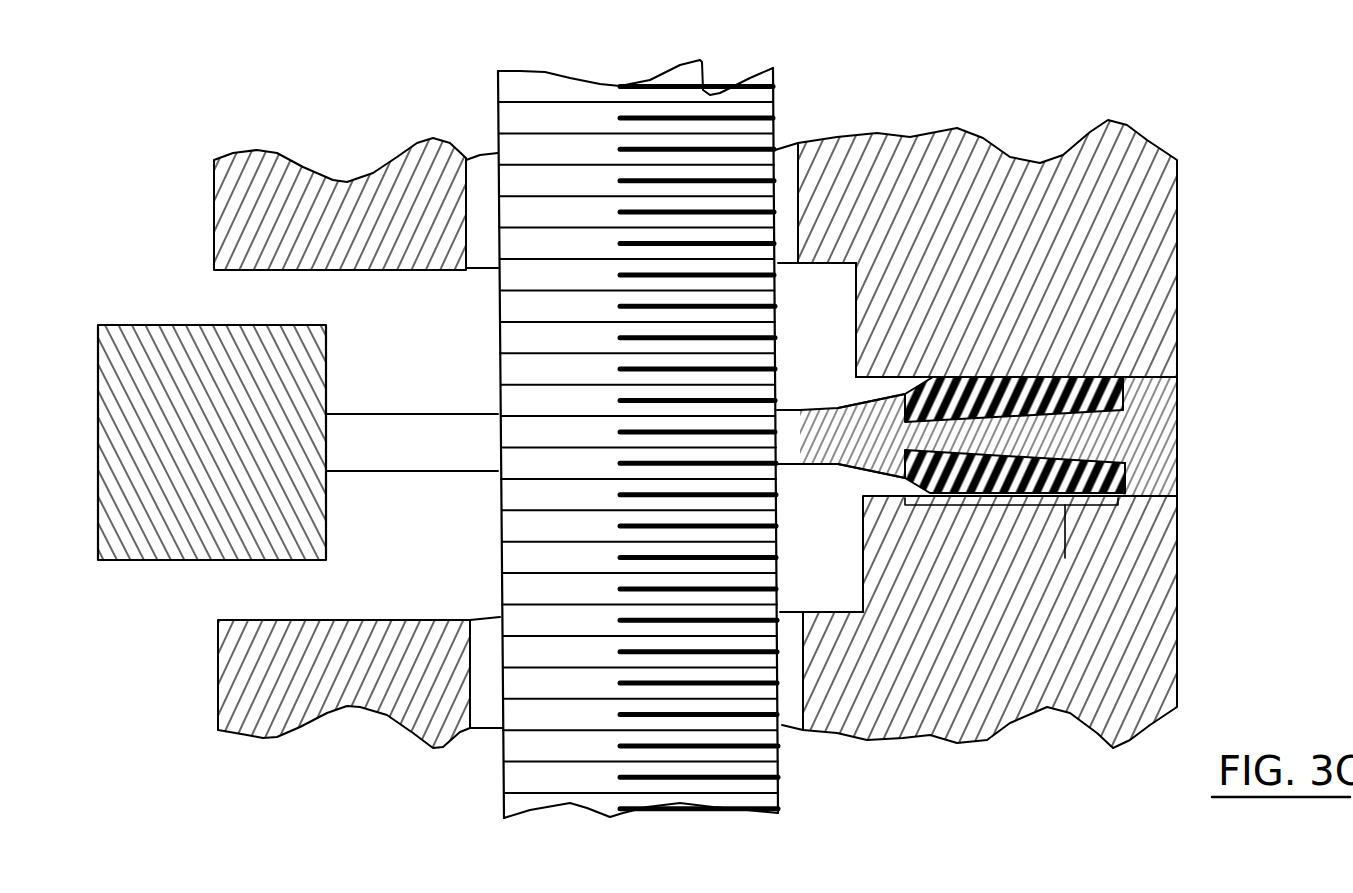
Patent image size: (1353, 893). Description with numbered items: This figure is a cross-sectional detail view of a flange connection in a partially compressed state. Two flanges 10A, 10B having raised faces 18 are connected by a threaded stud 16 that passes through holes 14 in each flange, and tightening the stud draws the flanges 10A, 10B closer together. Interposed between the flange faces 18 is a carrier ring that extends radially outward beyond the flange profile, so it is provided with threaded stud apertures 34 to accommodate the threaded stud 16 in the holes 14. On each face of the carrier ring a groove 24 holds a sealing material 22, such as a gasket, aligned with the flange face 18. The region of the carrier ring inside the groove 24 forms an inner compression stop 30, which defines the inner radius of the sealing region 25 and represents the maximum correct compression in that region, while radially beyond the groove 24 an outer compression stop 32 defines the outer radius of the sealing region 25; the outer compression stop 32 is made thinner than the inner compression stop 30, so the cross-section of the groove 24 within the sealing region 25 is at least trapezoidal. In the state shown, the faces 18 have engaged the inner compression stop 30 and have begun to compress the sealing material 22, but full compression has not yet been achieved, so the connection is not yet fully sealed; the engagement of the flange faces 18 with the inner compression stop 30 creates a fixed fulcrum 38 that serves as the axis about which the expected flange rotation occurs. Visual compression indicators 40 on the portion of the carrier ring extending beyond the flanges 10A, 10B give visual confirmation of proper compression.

The flange 10A is at (1003, 270).
The flange 10B is at (1005, 635).
The holes 14 is at (785, 168).
The threaded stud 16 is at (535, 88).
The raised face 18 is at (1063, 375).
The sealing material 22 is at (1127, 392).
The groove 24 is at (1075, 460).
The sealing region 25 is at (1065, 558).
The inner compression stop 30 is at (1132, 423).
The outer compression stop 32 is at (893, 432).
The threaded stud apertures 34 is at (783, 420).
The fixed fulcrum 38 is at (1128, 374).
The visual compression indicators 40 is at (196, 450).